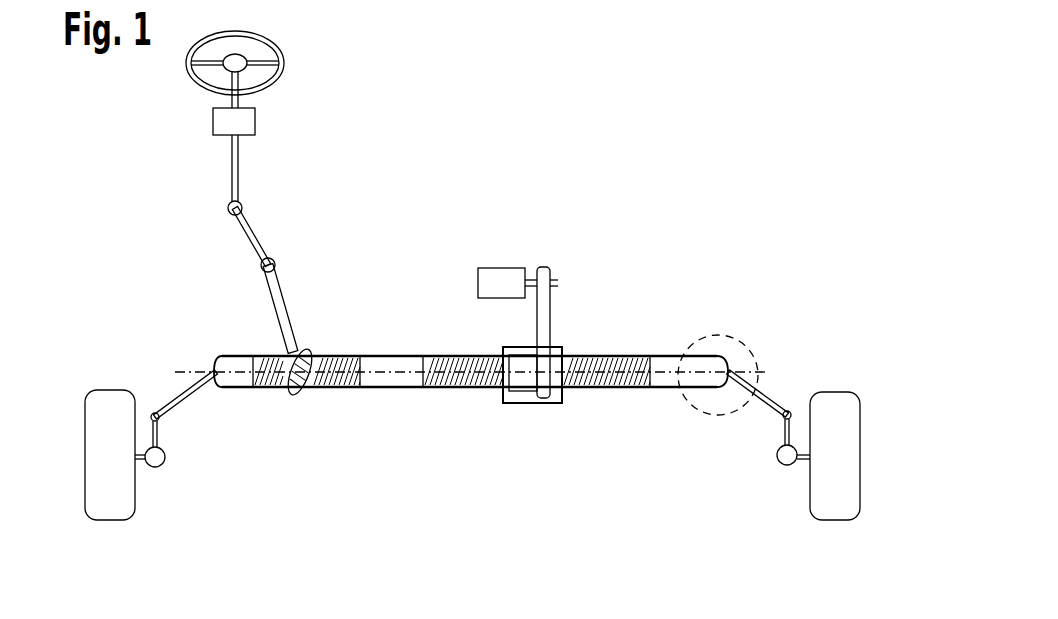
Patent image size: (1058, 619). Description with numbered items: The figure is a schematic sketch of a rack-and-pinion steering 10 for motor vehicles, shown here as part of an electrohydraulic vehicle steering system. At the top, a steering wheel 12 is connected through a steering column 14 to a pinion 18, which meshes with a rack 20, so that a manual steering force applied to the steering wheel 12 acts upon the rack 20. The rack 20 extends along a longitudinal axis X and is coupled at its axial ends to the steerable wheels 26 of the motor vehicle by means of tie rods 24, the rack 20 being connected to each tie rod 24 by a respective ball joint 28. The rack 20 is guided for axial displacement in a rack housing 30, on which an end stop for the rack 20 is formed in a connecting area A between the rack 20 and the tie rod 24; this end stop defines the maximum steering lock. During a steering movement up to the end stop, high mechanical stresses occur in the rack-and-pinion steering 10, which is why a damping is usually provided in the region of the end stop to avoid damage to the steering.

The rack-and-pinion steering 10 is at (818, 216).
The steering wheel 12 is at (284, 62).
The steering column 14 is at (240, 160).
The pinion 18 is at (303, 397).
The rack 20 is at (398, 378).
The tie rods 24 is at (190, 392).
The steerable wheels 26 is at (103, 442).
The ball joint 28 is at (166, 330).
The rack housing 30 is at (657, 390).
The connecting area A is at (718, 335).
The longitudinal axis X is at (482, 372).